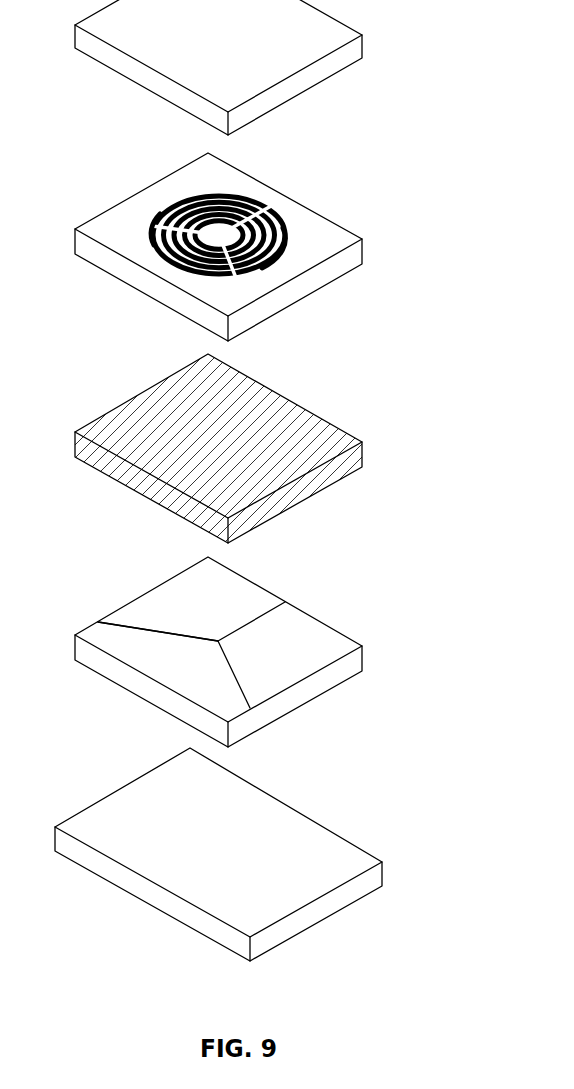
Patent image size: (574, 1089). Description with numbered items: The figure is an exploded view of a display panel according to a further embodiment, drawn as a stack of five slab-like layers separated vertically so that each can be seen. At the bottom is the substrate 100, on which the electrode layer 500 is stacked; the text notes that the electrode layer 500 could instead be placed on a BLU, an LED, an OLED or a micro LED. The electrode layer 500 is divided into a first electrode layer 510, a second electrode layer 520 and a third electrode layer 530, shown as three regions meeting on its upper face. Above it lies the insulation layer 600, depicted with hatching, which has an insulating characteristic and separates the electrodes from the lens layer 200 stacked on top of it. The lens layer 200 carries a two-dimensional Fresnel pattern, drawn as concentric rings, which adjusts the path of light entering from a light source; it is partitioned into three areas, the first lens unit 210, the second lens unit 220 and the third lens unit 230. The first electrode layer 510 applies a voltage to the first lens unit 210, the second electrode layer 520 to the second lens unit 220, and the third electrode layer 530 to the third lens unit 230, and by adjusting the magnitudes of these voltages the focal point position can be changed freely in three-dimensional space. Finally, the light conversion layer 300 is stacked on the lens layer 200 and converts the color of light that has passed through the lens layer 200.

The substrate 100 is at (382, 874).
The lens layer 200 is at (362, 252).
The first lens unit 210 is at (170, 204).
The second lens unit 220 is at (290, 235).
The third lens unit 230 is at (148, 228).
The light conversion layer 300 is at (362, 48).
The electrode layer 500 is at (362, 658).
The first electrode layer 510 is at (158, 600).
The second electrode layer 520 is at (315, 633).
The third electrode layer 530 is at (122, 648).
The insulation layer 600 is at (362, 455).